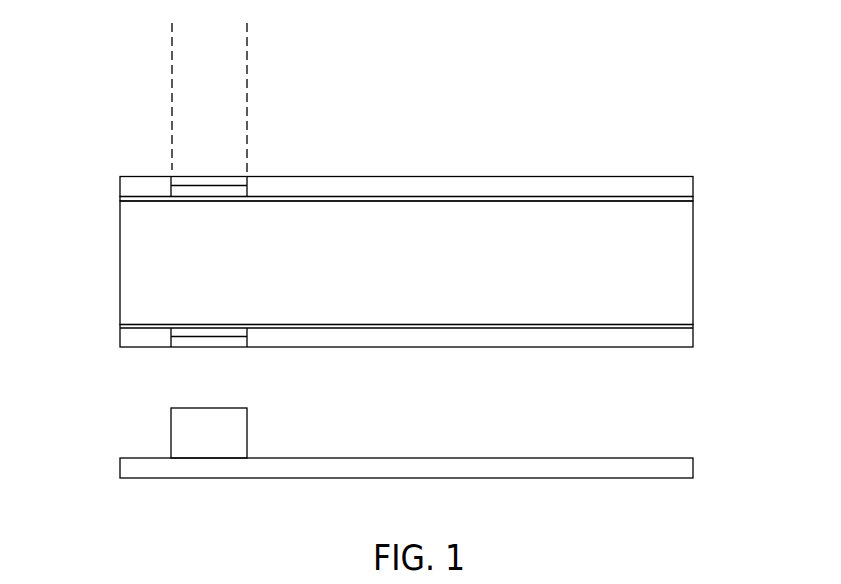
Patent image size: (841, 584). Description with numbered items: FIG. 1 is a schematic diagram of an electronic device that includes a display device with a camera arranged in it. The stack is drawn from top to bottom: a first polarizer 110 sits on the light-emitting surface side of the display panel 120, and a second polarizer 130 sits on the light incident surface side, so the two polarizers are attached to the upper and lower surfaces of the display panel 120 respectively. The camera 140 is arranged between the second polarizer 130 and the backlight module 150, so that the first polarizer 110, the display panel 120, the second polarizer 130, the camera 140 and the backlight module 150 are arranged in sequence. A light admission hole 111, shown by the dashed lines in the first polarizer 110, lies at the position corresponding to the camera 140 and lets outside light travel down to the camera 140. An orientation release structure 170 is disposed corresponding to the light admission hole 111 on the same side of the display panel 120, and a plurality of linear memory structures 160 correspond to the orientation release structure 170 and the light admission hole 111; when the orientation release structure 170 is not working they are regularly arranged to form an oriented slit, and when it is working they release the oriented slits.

The first polarizer 110 is at (642, 192).
The light admission hole 111 is at (215, 89).
The display panel 120 is at (640, 265).
The second polarizer 130 is at (648, 337).
The camera 140 is at (208, 422).
The backlight module 150 is at (628, 469).
The linear memory structures 160 is at (187, 197).
The orientation release structure 170 is at (213, 183).